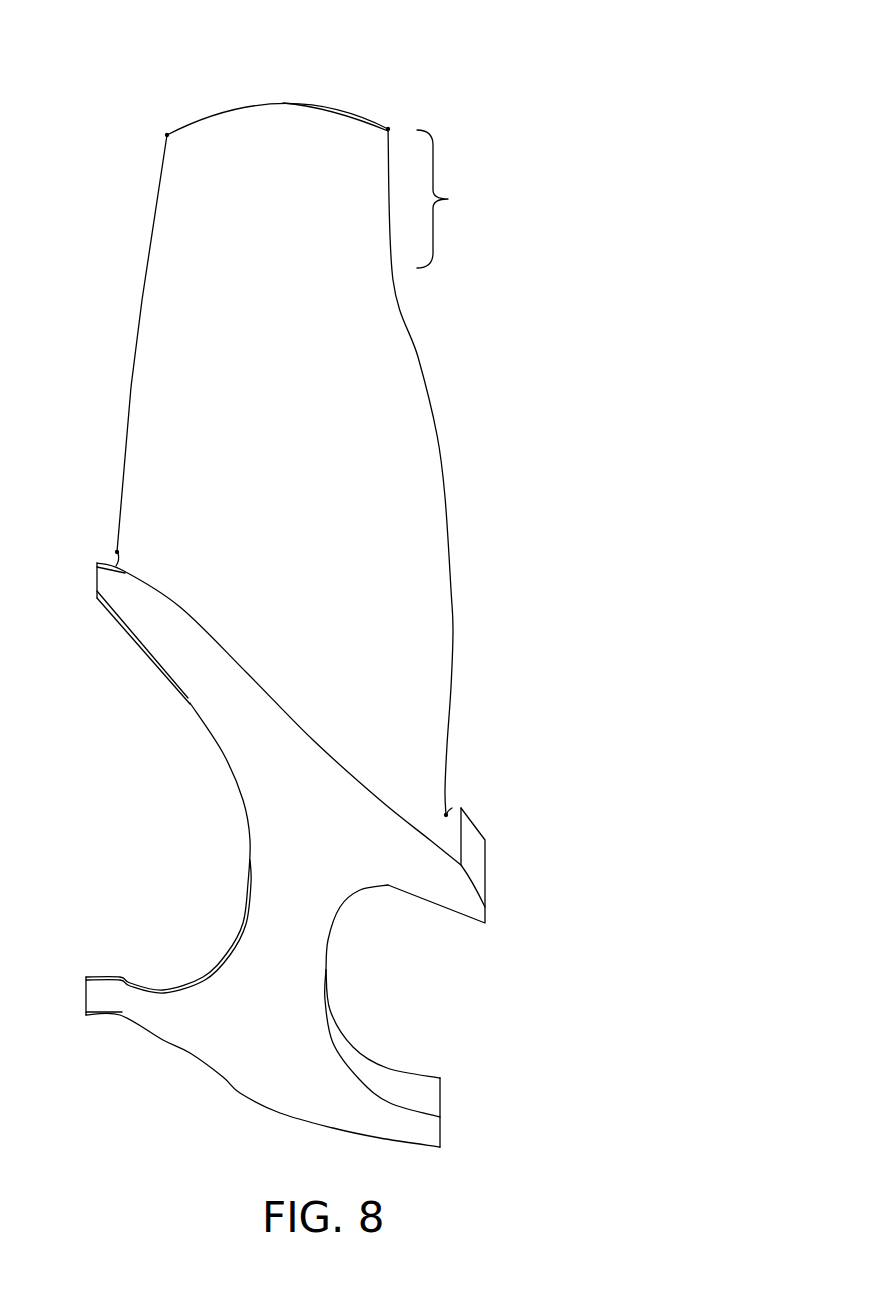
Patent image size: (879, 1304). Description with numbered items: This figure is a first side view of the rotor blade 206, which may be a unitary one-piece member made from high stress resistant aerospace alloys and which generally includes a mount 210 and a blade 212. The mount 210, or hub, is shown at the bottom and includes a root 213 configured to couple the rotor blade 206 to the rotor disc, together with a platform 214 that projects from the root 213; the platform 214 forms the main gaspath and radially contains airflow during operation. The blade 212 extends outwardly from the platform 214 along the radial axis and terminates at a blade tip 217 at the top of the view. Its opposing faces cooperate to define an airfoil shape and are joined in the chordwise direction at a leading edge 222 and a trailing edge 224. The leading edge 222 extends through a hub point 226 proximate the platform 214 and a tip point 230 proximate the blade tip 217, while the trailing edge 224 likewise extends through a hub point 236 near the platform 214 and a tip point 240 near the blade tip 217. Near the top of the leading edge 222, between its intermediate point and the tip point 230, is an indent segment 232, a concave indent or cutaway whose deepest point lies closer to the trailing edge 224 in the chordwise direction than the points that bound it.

The rotor blade 206 is at (518, 100).
The blade 212 is at (203, 282).
The blade tip 217 is at (263, 98).
The tip point 240 is at (167, 134).
The tip point 230 is at (388, 128).
The indent segment 232 is at (459, 199).
The trailing edge 224 is at (128, 388).
The leading edge 222 is at (443, 497).
The hub point 236 is at (115, 552).
The hub point 226 is at (453, 807).
The mount 210 is at (280, 910).
The root 213 is at (280, 963).
The platform 214 is at (452, 895).